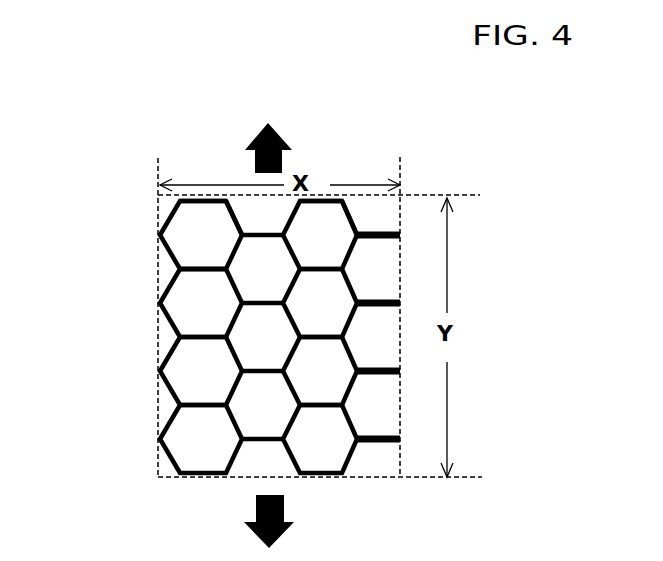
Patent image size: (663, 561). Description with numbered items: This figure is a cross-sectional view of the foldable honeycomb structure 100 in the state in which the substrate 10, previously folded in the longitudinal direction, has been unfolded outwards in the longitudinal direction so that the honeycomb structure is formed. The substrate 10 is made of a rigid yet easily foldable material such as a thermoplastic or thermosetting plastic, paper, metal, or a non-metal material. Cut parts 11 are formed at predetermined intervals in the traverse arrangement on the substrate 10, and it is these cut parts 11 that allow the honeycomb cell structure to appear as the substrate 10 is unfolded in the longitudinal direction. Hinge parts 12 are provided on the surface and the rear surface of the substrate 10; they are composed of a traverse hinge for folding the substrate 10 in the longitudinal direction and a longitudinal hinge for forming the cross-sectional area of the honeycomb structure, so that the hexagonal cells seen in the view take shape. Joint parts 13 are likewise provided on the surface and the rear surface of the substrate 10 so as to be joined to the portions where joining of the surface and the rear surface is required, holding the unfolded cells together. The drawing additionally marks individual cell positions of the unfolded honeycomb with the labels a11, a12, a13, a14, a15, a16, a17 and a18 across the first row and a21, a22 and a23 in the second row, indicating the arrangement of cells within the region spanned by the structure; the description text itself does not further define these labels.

The foldable honeycomb structure 100 is at (92, 165).
The substrate 10 is at (320, 349).
The cut part 11 is at (351, 458).
The hinge part 12 is at (180, 373).
The joint part 13 is at (180, 406).
The unit region a11 is at (182, 234).
The unit region a12 is at (198, 198).
The unit region a13 is at (232, 213).
The unit region a14 is at (262, 220).
The unit region a15 is at (320, 235).
The unit region a16 is at (324, 198).
The unit region a17 is at (353, 210).
The unit region a18 is at (357, 208).
The unit region a21 is at (182, 286).
The unit region a22 is at (203, 255).
The unit region a23 is at (259, 274).